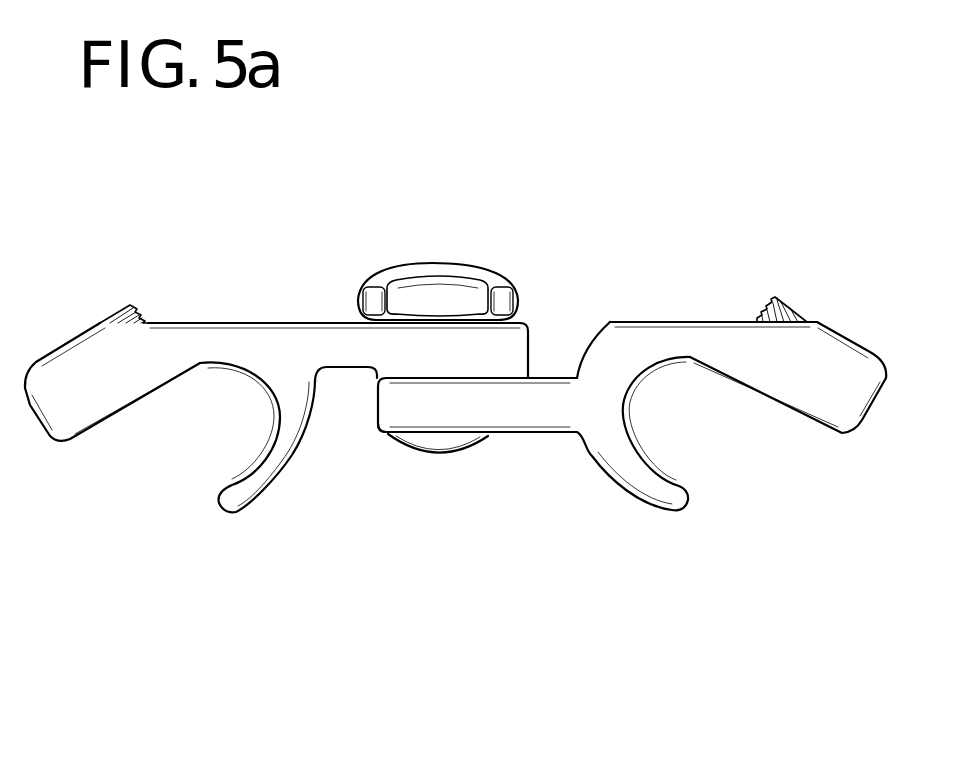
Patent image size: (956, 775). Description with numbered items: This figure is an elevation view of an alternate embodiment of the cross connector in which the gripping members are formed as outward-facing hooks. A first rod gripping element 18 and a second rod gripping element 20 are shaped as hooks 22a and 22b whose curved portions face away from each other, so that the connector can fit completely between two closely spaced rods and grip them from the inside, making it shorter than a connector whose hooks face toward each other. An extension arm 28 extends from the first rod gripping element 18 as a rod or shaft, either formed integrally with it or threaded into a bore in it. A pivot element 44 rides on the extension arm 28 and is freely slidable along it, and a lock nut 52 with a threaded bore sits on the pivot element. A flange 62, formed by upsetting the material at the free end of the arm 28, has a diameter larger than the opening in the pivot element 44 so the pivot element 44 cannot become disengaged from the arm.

The first rod gripping element 18 is at (242, 322).
The second rod gripping element 20 is at (674, 320).
The hook 22a is at (217, 510).
The hook 22b is at (685, 506).
The extension arm 28 is at (548, 377).
The pivot element 44 is at (480, 442).
The lock nut 52 is at (478, 266).
The flange 62 is at (377, 442).